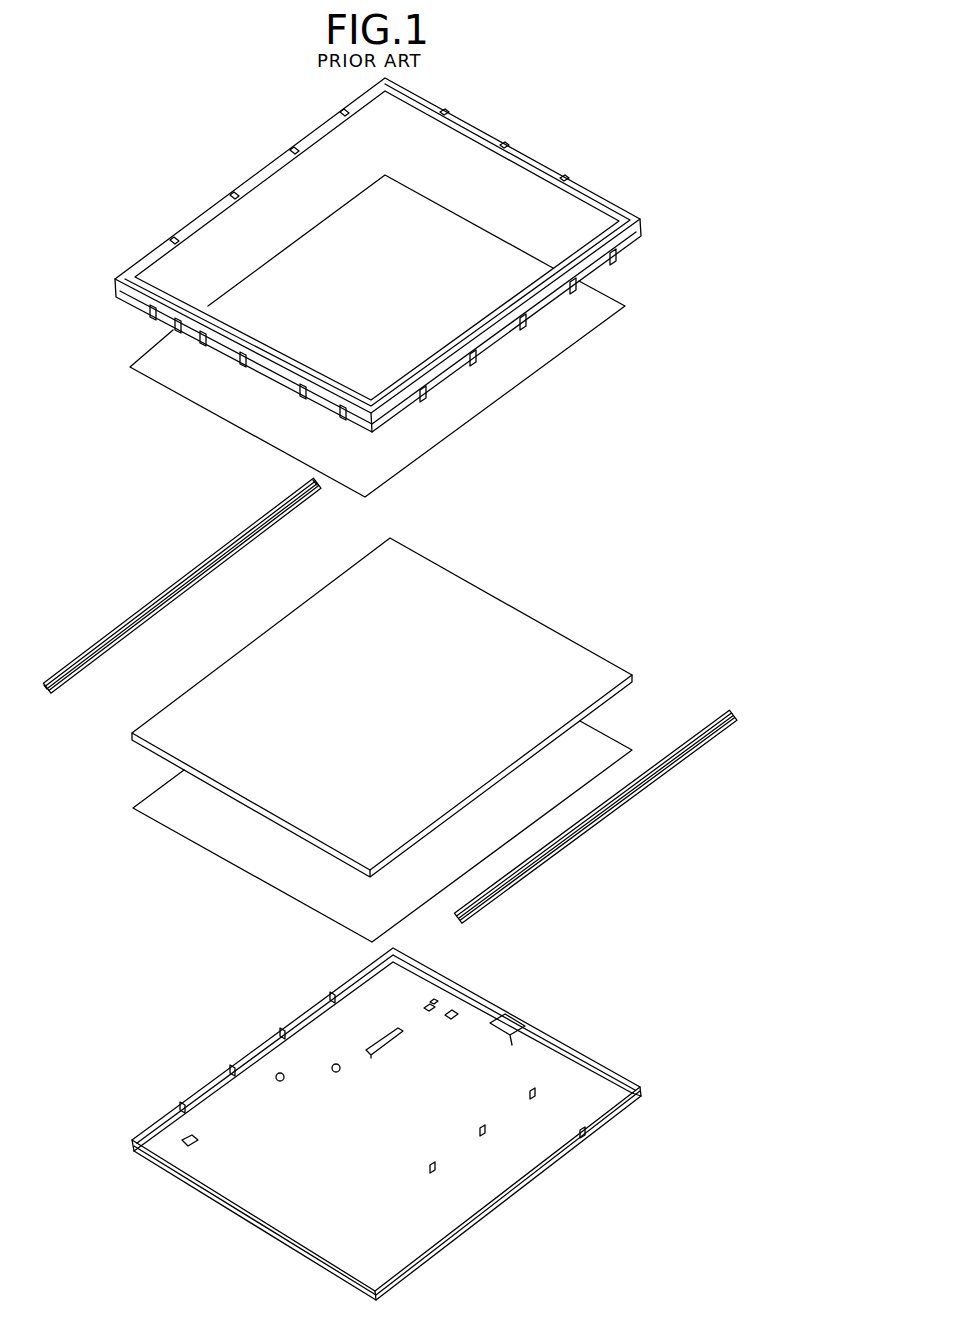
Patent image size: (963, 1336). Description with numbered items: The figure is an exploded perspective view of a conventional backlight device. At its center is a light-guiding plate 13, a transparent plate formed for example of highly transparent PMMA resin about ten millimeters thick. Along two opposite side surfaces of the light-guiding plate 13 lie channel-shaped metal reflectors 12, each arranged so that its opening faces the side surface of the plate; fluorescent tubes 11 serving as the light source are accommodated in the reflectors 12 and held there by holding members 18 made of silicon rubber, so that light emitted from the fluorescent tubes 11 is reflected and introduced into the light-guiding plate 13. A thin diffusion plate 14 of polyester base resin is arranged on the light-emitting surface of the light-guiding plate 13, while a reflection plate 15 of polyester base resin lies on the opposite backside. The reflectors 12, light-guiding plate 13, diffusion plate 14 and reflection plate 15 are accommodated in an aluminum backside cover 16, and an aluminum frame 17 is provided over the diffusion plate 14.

The fluorescent tube 11 is at (243, 548).
The reflector 12 is at (390, 700).
The light-guiding plate 13 is at (458, 573).
The diffusion plate 14 is at (530, 380).
The reflection plate 15 is at (213, 857).
The backside cover 16 is at (537, 1027).
The frame 17 is at (565, 177).
The holding member 18 is at (183, 588).